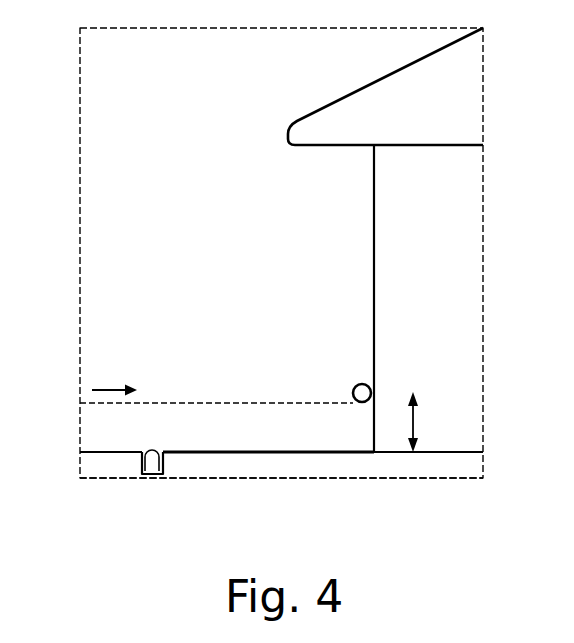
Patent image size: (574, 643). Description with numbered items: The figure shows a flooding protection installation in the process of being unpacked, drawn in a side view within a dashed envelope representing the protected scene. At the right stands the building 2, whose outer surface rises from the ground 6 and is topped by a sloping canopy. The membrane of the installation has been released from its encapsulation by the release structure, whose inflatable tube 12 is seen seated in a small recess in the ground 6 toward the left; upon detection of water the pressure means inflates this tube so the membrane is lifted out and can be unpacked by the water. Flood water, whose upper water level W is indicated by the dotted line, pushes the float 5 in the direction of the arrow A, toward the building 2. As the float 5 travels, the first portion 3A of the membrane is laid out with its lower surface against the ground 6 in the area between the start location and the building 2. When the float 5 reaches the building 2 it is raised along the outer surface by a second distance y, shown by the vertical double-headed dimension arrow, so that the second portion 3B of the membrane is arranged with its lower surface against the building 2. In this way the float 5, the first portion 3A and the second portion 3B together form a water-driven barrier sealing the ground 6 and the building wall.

The building 2 is at (406, 274).
The first portion of the membrane 3A is at (327, 455).
The second portion of the membrane 3B is at (376, 418).
The float 5 is at (361, 384).
The ground 6 is at (238, 517).
The tube 12 is at (155, 480).
The upper water level W is at (190, 402).
The arrow indicating direction of float movement A is at (114, 376).
The second distance y is at (421, 422).